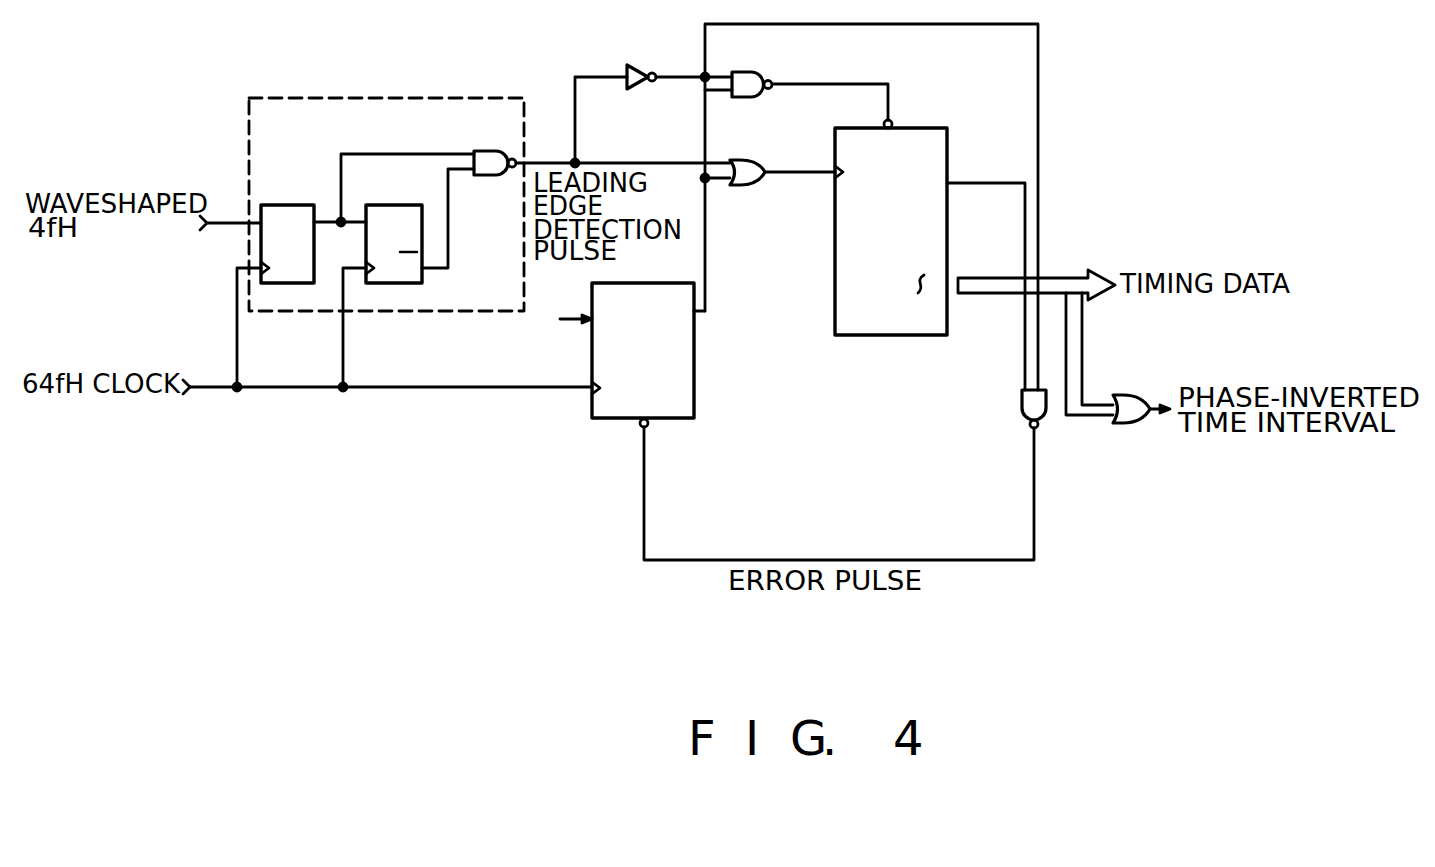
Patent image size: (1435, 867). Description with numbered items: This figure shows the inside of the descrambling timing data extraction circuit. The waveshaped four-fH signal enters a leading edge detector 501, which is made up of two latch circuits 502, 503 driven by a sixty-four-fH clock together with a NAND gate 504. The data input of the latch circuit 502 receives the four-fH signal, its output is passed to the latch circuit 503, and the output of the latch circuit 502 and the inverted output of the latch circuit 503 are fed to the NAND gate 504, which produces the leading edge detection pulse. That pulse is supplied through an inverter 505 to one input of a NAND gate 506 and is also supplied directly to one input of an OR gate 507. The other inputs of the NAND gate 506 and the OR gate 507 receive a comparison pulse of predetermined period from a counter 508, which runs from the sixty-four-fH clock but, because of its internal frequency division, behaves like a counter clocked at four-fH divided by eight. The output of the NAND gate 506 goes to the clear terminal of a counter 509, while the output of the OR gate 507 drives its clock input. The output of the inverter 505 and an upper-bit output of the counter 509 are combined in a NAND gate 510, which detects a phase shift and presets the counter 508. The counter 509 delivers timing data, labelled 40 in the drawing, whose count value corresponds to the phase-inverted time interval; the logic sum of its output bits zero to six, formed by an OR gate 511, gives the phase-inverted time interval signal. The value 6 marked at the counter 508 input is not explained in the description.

The leading edge detector 501 is at (393, 98).
The latch circuit 502 is at (288, 205).
The latch circuit 503 is at (396, 205).
The NAND gate 504 is at (493, 151).
The inverter 505 is at (643, 65).
The NAND gate 506 is at (758, 57).
The OR gate 507 is at (747, 160).
The counter 508 is at (607, 419).
The counter 509 is at (835, 312).
The NAND gate 510 is at (1022, 408).
The OR gate 511 is at (1128, 423).
The timing data output 40 is at (964, 278).
The preset value input 6 is at (567, 321).